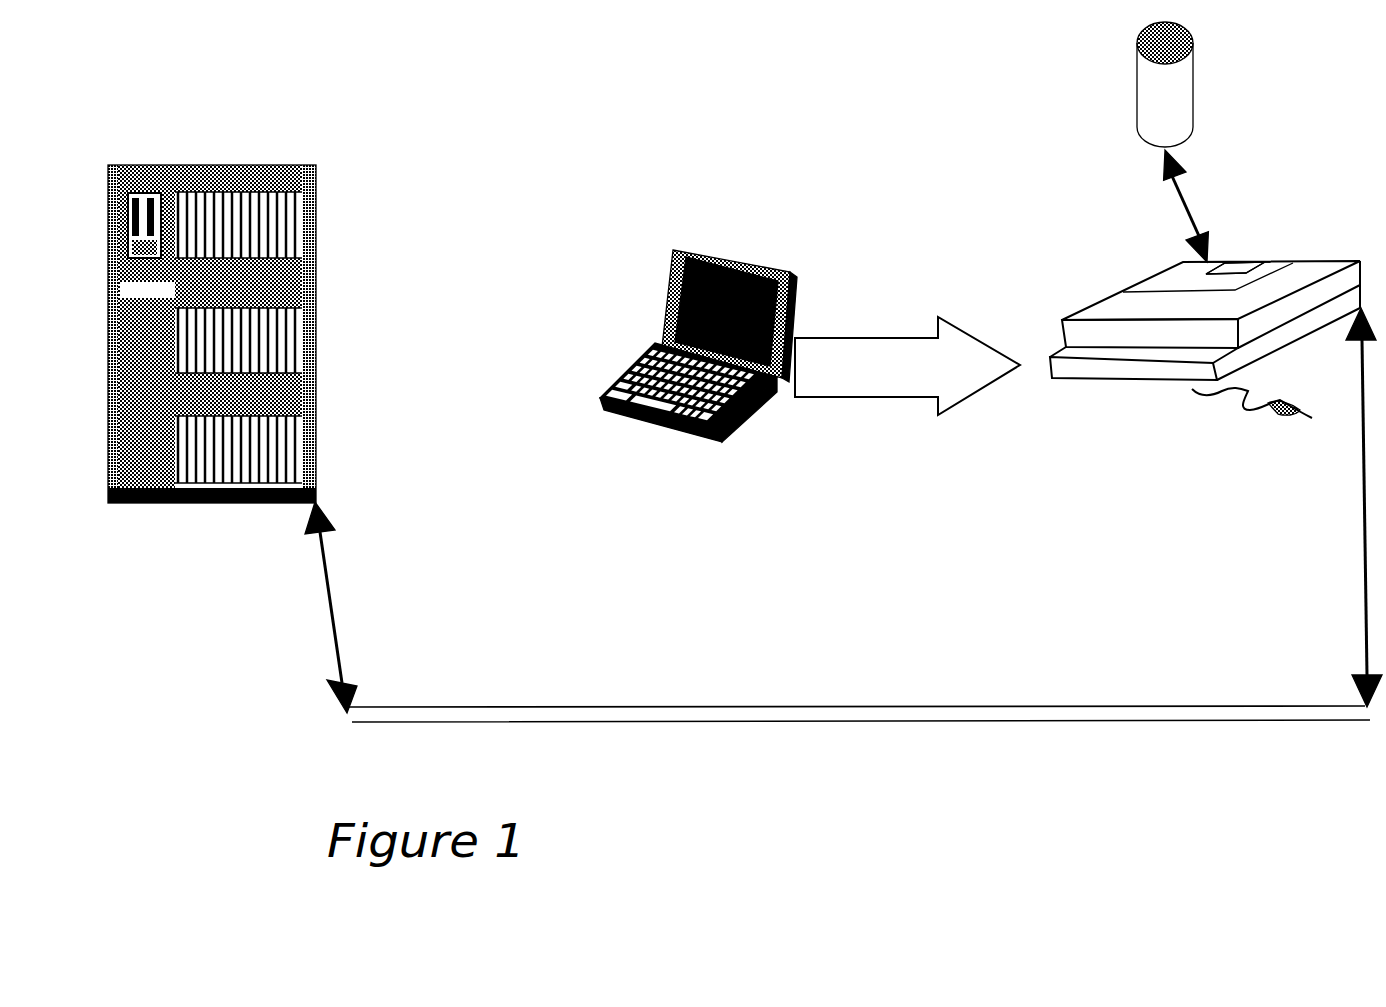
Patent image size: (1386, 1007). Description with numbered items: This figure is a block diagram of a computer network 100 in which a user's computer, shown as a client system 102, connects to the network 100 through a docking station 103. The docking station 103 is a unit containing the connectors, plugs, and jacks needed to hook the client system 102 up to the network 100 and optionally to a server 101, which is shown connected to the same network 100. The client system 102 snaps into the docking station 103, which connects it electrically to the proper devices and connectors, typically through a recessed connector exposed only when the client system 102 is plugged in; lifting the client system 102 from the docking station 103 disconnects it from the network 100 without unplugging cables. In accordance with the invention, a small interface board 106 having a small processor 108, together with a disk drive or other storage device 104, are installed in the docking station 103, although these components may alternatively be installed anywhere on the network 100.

The computer network 100 is at (843, 545).
The server 101 is at (212, 358).
The client system 102 is at (698, 388).
The docking station 103 is at (1205, 385).
The storage device 104 is at (1035, 142).
The interface board 106 is at (1245, 222).
The processor 108 is at (1152, 271).